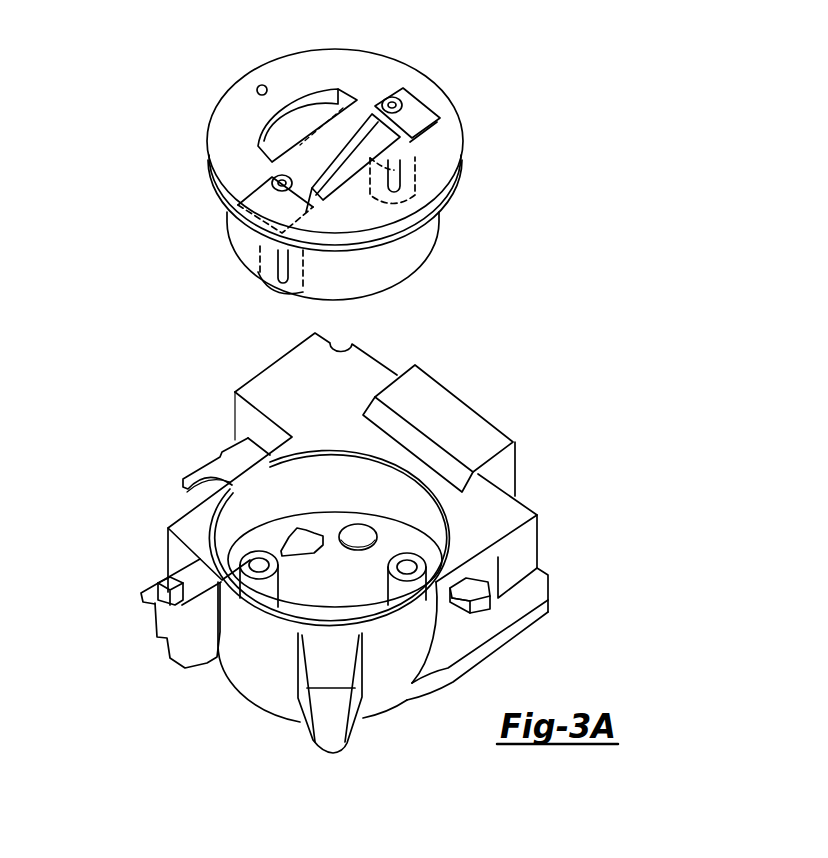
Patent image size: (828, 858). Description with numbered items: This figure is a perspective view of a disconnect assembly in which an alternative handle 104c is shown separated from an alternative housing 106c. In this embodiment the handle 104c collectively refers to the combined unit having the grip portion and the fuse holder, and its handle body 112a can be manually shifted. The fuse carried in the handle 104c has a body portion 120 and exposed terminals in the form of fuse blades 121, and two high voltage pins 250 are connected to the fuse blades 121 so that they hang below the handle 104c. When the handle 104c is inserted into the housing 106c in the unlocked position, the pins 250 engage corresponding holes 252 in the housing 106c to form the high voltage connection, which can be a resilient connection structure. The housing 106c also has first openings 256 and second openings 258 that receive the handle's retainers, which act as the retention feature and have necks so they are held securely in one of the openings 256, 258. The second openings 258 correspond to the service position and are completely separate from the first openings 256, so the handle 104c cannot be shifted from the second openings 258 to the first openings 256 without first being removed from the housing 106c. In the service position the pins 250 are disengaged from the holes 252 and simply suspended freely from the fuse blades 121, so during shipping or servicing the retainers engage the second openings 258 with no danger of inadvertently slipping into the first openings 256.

The cap 112a is at (380, 75).
The fuse blades 121 is at (428, 104).
The high voltage pins 250 is at (415, 178).
The handle 104c is at (450, 197).
The body portion 120 is at (303, 205).
The housing 106c is at (540, 543).
The holes 252 is at (393, 563).
The first openings 256 is at (293, 541).
The second openings 258 is at (360, 533).